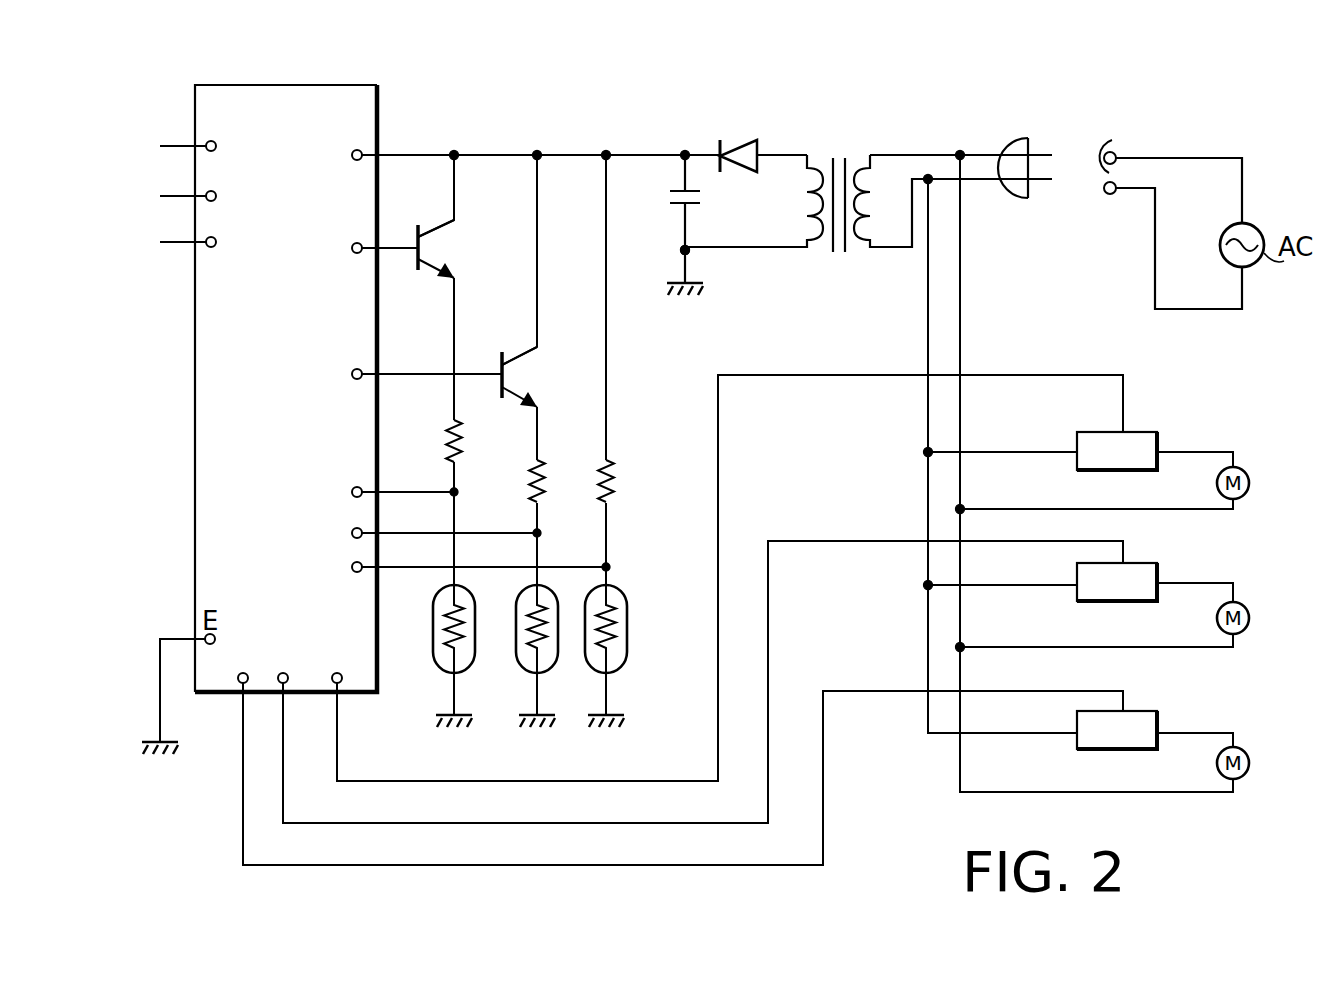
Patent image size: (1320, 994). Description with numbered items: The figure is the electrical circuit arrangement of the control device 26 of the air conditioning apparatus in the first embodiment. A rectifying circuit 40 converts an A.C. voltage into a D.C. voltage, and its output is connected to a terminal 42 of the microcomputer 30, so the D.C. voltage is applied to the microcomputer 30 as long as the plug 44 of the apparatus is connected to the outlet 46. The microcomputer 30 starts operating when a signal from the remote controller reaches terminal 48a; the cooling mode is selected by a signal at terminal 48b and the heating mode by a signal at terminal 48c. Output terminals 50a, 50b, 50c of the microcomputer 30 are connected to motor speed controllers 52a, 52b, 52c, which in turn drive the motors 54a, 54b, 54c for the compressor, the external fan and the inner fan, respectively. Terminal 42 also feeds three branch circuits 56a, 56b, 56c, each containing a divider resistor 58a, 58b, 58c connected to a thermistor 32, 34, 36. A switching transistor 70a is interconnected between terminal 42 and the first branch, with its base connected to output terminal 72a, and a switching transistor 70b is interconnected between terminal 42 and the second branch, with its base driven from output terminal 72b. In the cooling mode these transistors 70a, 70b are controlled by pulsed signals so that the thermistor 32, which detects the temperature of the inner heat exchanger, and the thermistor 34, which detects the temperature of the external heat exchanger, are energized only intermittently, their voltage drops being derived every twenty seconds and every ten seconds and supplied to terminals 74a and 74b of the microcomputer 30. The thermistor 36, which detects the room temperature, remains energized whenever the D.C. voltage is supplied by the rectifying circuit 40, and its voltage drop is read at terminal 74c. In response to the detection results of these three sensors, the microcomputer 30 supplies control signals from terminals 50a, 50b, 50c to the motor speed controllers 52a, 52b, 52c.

The control device 26 is at (122, 872).
The microcomputer 30 is at (249, 85).
The thermistor 32 is at (432, 655).
The thermistor 34 is at (514, 655).
The thermistor 36 is at (614, 655).
The rectifying circuit 40 is at (822, 148).
The terminal 42 is at (519, 156).
The plug 44 is at (1004, 146).
The outlet 46 is at (1171, 202).
The terminal 48a is at (216, 147).
The terminal 48b is at (217, 197).
The terminal 48c is at (215, 243).
The output terminal 50a is at (672, 754).
The output terminal 50b is at (695, 682).
The output terminal 50c is at (722, 578).
The motor speed controller 52a is at (1126, 432).
The motor speed controller 52b is at (1126, 563).
The motor speed controller 52c is at (1126, 711).
The motor 54a is at (1250, 490).
The motor 54b is at (1250, 625).
The motor 54c is at (1250, 770).
The branch circuit 56a is at (462, 172).
The branch circuit 56b is at (542, 172).
The branch circuit 56c is at (632, 390).
The divider resistor 58a is at (438, 467).
The divider resistor 58b is at (518, 508).
The divider resistor 58c is at (606, 505).
The switching transistor 70a is at (440, 250).
The switching transistor 70b is at (516, 376).
The output terminal 72a is at (360, 249).
The output terminal 72b is at (402, 375).
The terminal 74a is at (380, 493).
The terminal 74b is at (421, 534).
The terminal 74c is at (456, 568).